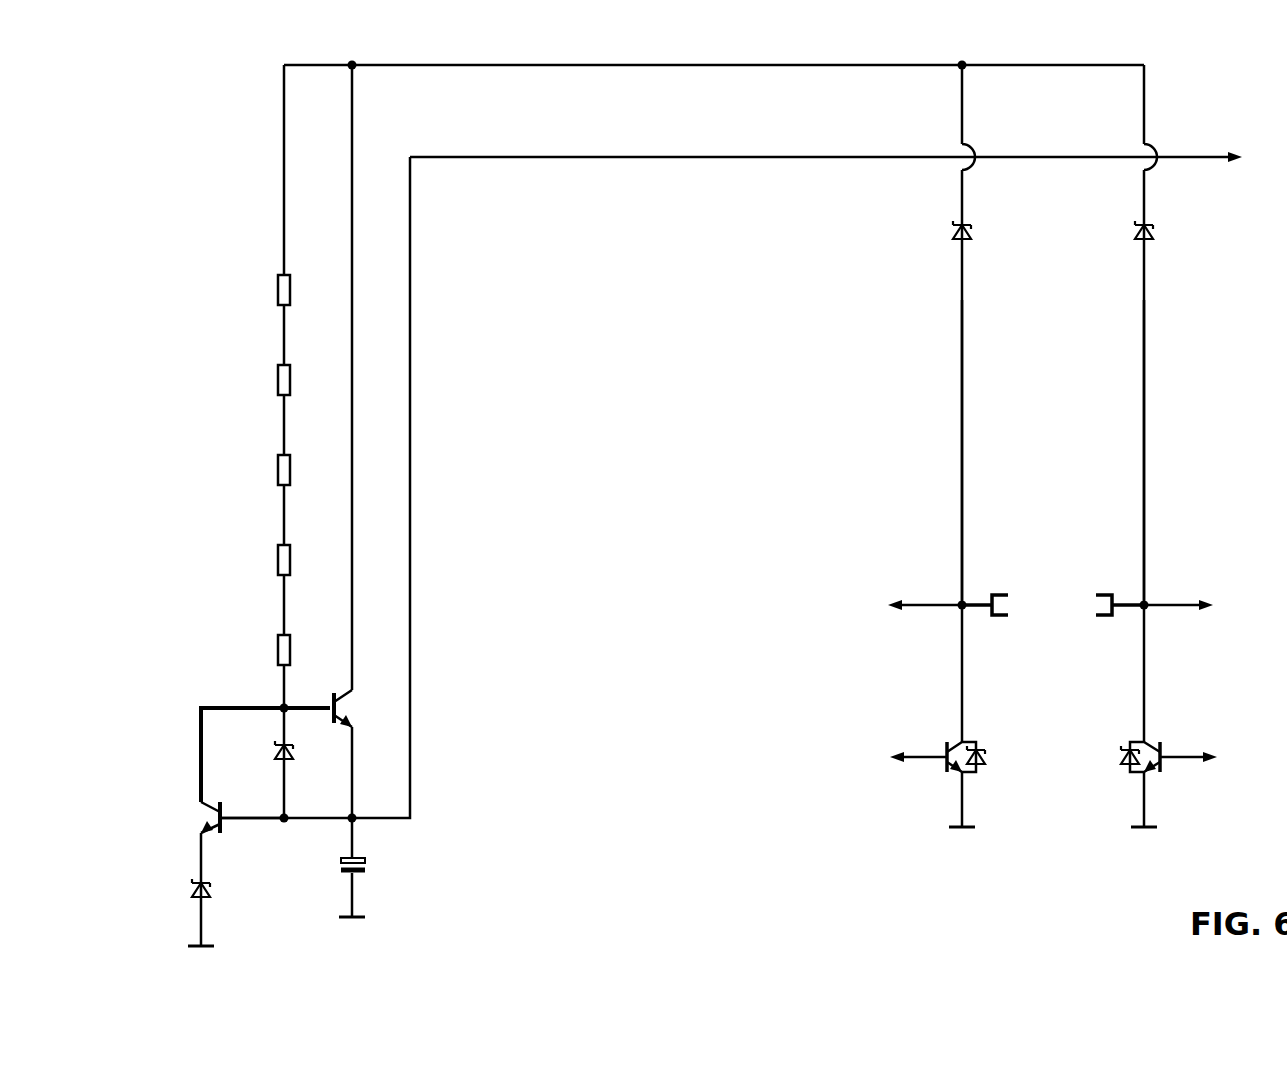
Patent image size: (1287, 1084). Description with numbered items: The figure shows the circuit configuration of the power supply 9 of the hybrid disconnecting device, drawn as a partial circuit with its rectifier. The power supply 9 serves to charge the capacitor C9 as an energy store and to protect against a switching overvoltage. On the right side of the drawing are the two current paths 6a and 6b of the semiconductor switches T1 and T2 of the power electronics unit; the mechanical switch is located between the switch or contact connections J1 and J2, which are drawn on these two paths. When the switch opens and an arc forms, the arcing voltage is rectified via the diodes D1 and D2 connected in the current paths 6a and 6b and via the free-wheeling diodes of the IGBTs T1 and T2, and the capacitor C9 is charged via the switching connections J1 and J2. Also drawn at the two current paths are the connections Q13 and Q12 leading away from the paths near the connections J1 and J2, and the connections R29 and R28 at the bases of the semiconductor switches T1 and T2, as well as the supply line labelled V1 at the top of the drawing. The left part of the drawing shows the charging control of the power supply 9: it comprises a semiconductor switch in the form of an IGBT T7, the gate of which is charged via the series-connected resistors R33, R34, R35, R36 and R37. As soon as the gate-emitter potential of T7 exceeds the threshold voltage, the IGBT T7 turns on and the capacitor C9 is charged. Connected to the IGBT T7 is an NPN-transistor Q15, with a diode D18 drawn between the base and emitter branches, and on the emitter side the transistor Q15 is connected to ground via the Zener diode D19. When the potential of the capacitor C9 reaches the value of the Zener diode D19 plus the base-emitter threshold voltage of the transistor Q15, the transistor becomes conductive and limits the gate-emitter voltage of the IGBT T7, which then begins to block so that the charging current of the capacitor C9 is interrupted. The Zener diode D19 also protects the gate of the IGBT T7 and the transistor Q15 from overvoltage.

The power supply 9 is at (694, 425).
The supply voltage V1 is at (1178, 157).
The resistor R33 is at (255, 290).
The resistor R34 is at (255, 380).
The resistor R35 is at (255, 470).
The resistor R36 is at (255, 560).
The resistor R37 is at (255, 650).
The IGBT T7 is at (338, 754).
The zener diode D18 is at (311, 754).
The NPN-transistor Q15 is at (217, 827).
The Zener diode D19 is at (230, 912).
The capacitor C9 is at (371, 867).
The diode D1 is at (987, 234).
The diode D2 is at (1168, 234).
The current path 6a is at (960, 447).
The current path 6b is at (1146, 447).
The switching connection J1 is at (1005, 594).
The switching connection J2 is at (1099, 594).
The transistor connection Q13 is at (922, 590).
The transistor connection Q12 is at (1188, 590).
The semiconductor switch T1 is at (983, 757).
The semiconductor switch T2 is at (1122, 757).
The resistor connection R29 is at (900, 738).
The resistor connection R28 is at (1210, 738).